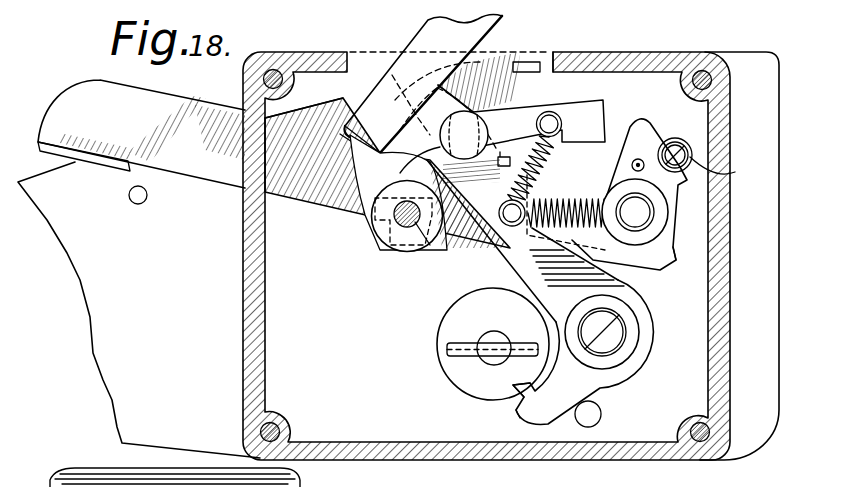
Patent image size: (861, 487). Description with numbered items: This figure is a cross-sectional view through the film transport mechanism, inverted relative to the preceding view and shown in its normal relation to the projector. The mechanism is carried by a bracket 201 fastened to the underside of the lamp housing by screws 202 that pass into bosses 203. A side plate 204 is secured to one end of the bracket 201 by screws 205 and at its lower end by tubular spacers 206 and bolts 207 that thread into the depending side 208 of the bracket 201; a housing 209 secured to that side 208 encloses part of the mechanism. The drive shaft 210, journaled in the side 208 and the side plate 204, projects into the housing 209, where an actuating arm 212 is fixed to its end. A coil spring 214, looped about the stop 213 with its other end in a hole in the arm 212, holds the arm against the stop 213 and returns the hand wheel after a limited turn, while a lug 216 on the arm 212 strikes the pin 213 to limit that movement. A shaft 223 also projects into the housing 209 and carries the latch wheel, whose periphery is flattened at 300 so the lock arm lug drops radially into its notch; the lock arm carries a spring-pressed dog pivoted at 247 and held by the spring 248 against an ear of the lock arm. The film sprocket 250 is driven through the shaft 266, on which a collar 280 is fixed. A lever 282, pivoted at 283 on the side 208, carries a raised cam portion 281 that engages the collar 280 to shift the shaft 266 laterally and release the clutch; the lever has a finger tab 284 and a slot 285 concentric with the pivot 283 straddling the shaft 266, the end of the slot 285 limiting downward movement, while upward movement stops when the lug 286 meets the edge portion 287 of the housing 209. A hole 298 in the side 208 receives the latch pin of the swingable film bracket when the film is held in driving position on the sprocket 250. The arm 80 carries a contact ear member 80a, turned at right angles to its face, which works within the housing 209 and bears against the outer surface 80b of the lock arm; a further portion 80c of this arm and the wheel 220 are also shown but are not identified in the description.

The arm 80 is at (428, 28).
The contact ear member 80a is at (348, 132).
The outer surface of the lock arm 80b is at (312, 150).
The hidden cam portion 80c is at (430, 100).
The bracket 201 is at (523, 387).
The screws 202 is at (522, 403).
The bosses 203 is at (555, 284).
The side plate 204 is at (620, 338).
The screws 205 is at (577, 198).
The tubular spacers 206 is at (566, 92).
The bolts 207 is at (590, 415).
The depending side of the bracket 208 is at (105, 322).
The housing 209 is at (505, 156).
The drive shaft 210 is at (637, 220).
The actuating arm 212 is at (639, 127).
The stop 213 is at (729, 171).
The coil spring 214 is at (672, 140).
The lug 216 is at (678, 258).
The disc 220 is at (452, 375).
The shaft 223 is at (487, 340).
The pivot of the dog 247 is at (472, 112).
The spring 248 is at (540, 165).
The film sprocket 250 is at (458, 343).
The shaft 266 is at (428, 246).
The collar 280 is at (395, 240).
The cam portion 281 is at (370, 126).
The lever 282 is at (200, 170).
The pivot 283 is at (516, 256).
The finger tab 284 is at (100, 163).
The slot 285 is at (375, 222).
The lug 286 is at (520, 60).
The edge portion of the housing 287 is at (575, 38).
The hole 298 is at (142, 204).
The flattened peripheral surface 300 is at (510, 410).